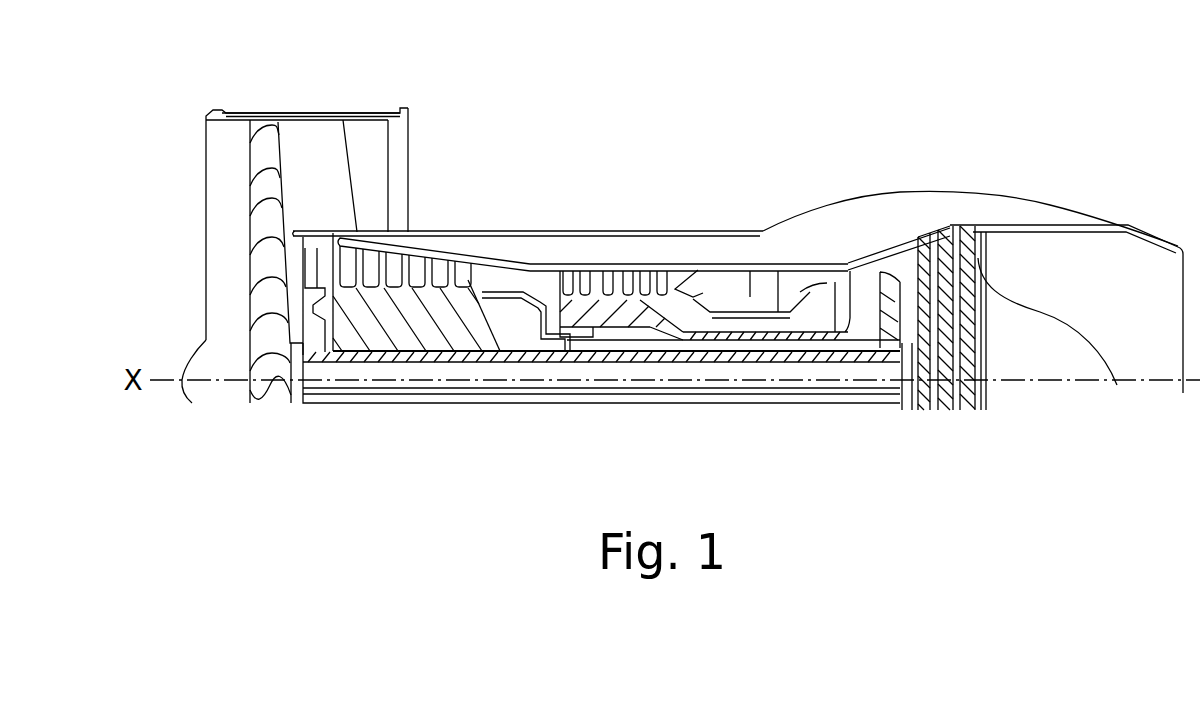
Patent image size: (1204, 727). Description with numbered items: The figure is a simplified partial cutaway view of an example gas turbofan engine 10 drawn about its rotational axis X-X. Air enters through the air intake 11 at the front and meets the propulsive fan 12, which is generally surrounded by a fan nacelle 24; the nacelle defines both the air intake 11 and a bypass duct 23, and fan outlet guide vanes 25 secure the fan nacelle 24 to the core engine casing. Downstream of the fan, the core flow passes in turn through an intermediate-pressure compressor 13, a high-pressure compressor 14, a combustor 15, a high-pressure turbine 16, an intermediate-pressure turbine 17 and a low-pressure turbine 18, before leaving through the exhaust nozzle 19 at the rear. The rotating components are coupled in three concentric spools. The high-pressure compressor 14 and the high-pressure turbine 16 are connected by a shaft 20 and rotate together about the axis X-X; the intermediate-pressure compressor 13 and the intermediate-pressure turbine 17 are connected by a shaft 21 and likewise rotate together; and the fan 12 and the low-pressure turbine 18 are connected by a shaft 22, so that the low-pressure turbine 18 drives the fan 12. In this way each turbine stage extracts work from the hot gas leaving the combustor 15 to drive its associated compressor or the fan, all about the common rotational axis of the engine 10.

The gas turbofan engine 10 is at (605, 140).
The air intake 11 is at (191, 237).
The propulsive fan 12 is at (273, 157).
The intermediate-pressure compressor 13 is at (417, 300).
The high-pressure compressor 14 is at (612, 268).
The combustor 15 is at (764, 263).
The high-pressure turbine 16 is at (843, 266).
The intermediate-pressure turbine 17 is at (891, 260).
The low-pressure turbine 18 is at (980, 260).
The exhaust nozzle 19 is at (1137, 260).
The shaft 20 is at (815, 275).
The shaft 21 is at (549, 353).
The shaft 22 is at (406, 405).
The bypass duct 23 is at (318, 170).
The fan nacelle 24 is at (230, 108).
The fan outlet guide vanes 25 is at (400, 147).